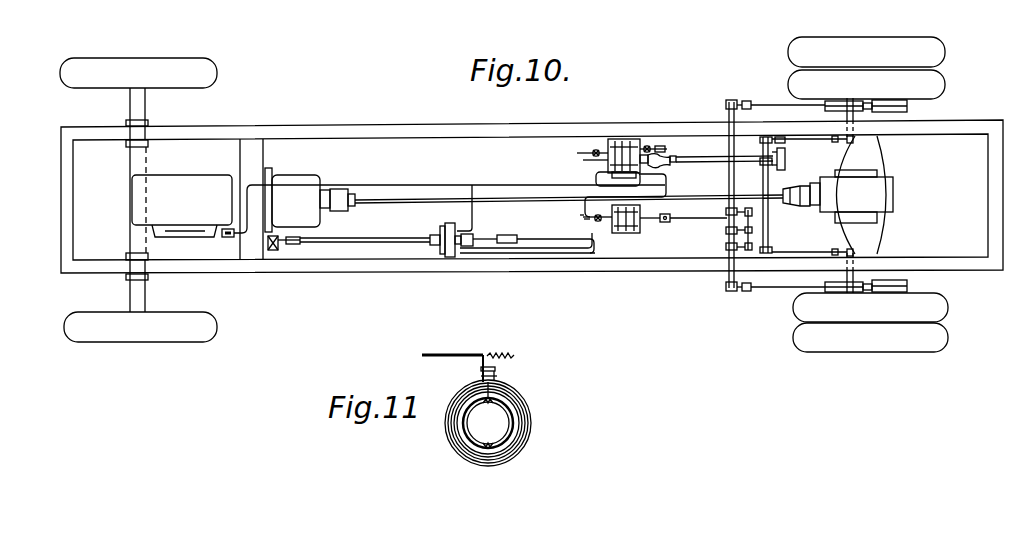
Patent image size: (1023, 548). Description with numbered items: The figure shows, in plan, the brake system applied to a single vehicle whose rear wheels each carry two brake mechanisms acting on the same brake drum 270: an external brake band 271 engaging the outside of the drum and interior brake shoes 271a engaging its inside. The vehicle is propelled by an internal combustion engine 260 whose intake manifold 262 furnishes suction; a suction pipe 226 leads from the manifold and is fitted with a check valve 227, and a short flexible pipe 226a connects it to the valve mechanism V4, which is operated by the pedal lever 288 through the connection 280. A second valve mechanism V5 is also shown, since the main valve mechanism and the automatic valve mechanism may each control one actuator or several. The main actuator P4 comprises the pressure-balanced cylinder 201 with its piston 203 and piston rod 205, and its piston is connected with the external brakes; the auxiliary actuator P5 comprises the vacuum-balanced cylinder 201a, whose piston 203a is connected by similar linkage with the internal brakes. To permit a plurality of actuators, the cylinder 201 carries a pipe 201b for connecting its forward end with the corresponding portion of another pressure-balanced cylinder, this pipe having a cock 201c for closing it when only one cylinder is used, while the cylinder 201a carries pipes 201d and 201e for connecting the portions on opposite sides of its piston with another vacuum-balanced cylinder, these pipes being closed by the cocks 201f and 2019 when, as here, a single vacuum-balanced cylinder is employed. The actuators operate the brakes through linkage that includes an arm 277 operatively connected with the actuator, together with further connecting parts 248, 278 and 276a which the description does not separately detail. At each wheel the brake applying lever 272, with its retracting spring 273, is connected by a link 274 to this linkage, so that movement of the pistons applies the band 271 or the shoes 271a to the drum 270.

In FIG. 10, the internal combustion engine 260 is at (182, 200).
In FIG. 10, the intake manifold 262 is at (183, 237).
In FIG. 10, the check valve 227 is at (229, 237).
In FIG. 10, the pedal lever 288 is at (272, 251).
In FIG. 10, the suction pipe 226 is at (393, 185).
In FIG. 10, the short flexible pipe 226a is at (474, 209).
In FIG. 10, the control rod 280 is at (368, 238).
In FIG. 10, the valve V4 is at (451, 232).
In FIG. 10, the piston rod 205 is at (486, 237).
In FIG. 10, the cylinder 201 is at (622, 234).
In FIG. 10, the vacuum-balanced actuator cylinder 201a is at (617, 139).
In FIG. 10, the pipe 201b is at (583, 216).
In FIG. 10, the cock 201c is at (595, 220).
In FIG. 10, the pipe 201d is at (578, 154).
In FIG. 10, the pipe 201e is at (668, 150).
In FIG. 10, the cock 201f is at (590, 161).
In FIG. 10, the cock 2019 is at (651, 147).
In FIG. 10, the piston 203 is at (641, 208).
In FIG. 10, the piston 203a is at (630, 152).
In FIG. 10, the main actuator P4 is at (622, 225).
In FIG. 10, the auxiliary actuator P5 is at (593, 153).
In FIG. 10, the valve V5 is at (630, 183).
In FIG. 10, the conduit 248 is at (668, 182).
In FIG. 10, the rod 278 is at (690, 218).
In FIG. 10, the brake drum 270 is at (828, 108).
In FIG. 11, the brake drum 270 is at (527, 417).
In FIG. 10, the external brake band 271 is at (907, 106).
In FIG. 11, the external brake band 271 is at (527, 401).
In FIG. 11, the interior brake shoes 271a is at (462, 425).
In FIG. 10, the arm 277 is at (786, 157).
In FIG. 10, the link rod 276a is at (769, 239).
In FIG. 11, the brake applying lever 272 is at (511, 345).
In FIG. 11, the retracting spring 273 is at (497, 370).
In FIG. 11, the link 274 is at (425, 368).